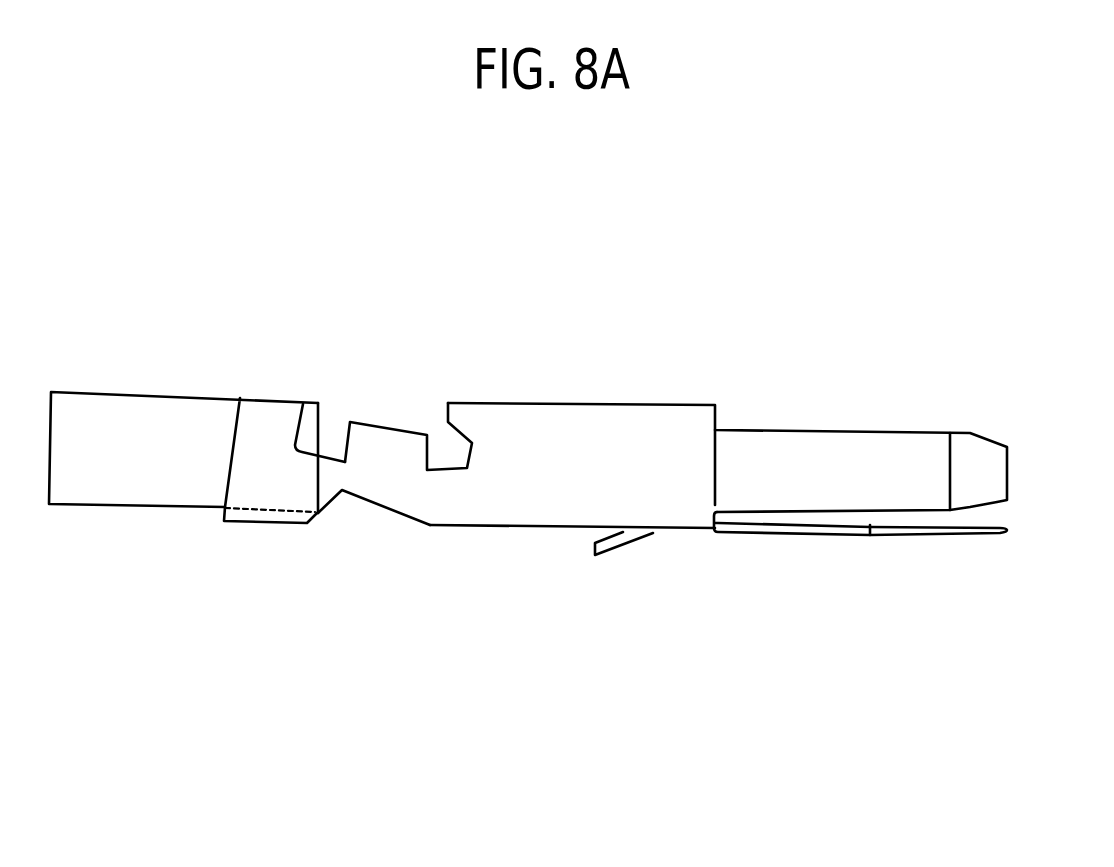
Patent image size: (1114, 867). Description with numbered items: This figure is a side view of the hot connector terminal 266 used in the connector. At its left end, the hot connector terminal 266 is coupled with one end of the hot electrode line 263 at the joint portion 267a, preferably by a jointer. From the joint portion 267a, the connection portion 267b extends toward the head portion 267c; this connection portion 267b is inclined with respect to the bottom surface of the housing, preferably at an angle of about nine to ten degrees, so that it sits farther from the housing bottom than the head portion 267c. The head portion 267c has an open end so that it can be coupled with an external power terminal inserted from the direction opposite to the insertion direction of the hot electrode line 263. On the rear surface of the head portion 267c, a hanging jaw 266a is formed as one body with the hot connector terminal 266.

The hot connector terminal 266 is at (970, 322).
The hot electrode line 263 is at (117, 495).
The joint portion 267a is at (262, 532).
The connection portion 267b is at (373, 537).
The head portion 267c is at (697, 542).
The hanging jaw 266a is at (622, 543).